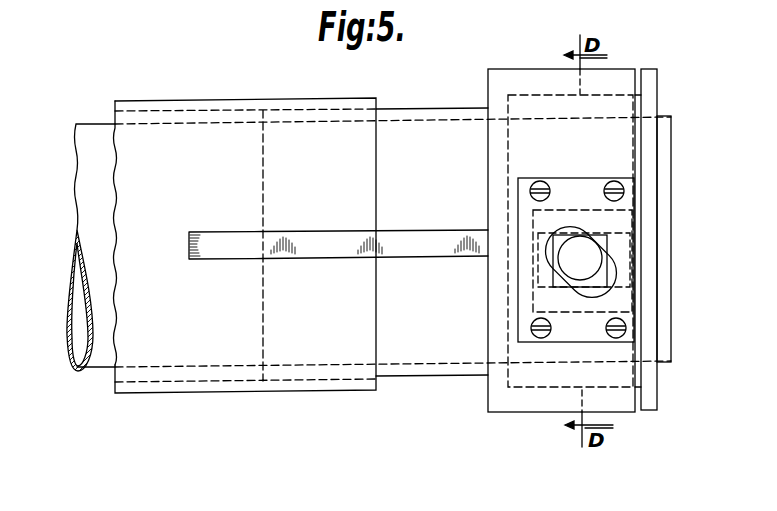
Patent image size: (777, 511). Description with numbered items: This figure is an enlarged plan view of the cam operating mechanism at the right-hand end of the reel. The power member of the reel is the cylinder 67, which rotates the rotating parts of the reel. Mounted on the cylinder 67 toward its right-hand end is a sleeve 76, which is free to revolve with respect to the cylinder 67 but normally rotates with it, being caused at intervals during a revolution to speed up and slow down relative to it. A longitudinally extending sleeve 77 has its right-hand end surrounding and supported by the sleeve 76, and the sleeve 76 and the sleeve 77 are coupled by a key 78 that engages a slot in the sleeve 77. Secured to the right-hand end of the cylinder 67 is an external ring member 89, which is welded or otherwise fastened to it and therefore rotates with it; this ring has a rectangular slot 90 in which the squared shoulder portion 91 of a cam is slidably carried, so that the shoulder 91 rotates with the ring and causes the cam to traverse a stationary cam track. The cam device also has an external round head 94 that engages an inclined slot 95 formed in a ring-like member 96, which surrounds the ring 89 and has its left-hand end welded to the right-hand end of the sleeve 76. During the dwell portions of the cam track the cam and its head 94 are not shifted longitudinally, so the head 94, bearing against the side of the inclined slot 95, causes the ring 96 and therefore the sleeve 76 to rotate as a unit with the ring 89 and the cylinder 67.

The cylinder 67 is at (82, 206).
The sleeve 76 is at (450, 371).
The longitudinally extending sleeve 77 is at (214, 236).
The key 78 is at (423, 237).
The external ring member 89 is at (640, 330).
The rectangular slot 90 is at (623, 283).
The squared shoulder portion 91 is at (613, 240).
The external round head 94 is at (600, 277).
The inclined slot 95 is at (569, 221).
The ring-like member 96 is at (548, 401).